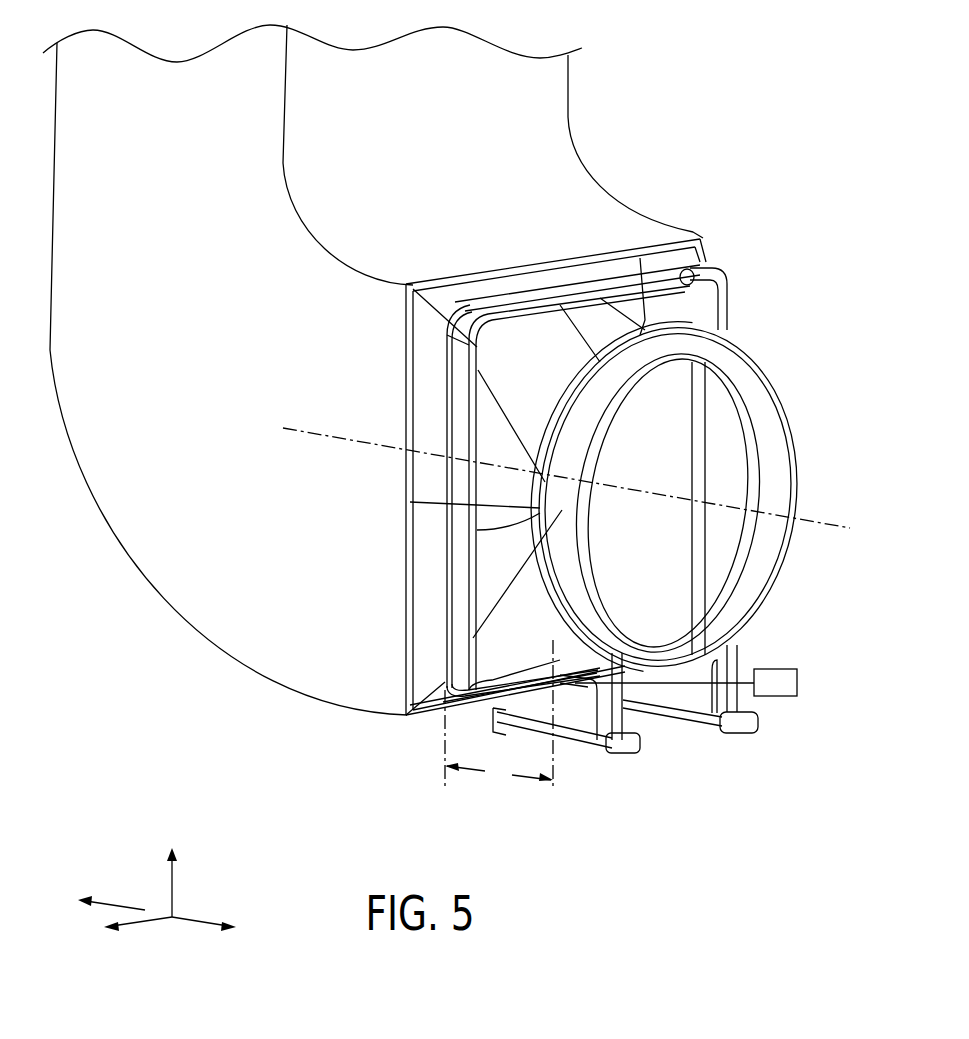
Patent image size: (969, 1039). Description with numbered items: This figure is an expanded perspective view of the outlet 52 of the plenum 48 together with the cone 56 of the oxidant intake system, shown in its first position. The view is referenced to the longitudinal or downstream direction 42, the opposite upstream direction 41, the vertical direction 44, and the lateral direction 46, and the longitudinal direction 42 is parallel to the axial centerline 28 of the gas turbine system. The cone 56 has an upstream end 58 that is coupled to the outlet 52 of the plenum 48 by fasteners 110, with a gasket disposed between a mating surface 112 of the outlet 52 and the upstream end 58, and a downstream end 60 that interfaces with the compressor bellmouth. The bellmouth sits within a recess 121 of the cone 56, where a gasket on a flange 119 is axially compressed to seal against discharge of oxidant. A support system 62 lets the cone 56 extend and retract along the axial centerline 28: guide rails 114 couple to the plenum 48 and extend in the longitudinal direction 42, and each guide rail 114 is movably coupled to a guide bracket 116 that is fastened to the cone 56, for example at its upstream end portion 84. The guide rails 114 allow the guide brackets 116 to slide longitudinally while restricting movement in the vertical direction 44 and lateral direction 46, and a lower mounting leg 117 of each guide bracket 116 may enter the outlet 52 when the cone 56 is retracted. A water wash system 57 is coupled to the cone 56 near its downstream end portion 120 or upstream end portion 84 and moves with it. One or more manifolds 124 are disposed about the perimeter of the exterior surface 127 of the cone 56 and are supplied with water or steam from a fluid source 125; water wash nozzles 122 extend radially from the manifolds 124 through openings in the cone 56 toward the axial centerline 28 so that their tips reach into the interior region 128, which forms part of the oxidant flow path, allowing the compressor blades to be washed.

The axial centerline 28 is at (812, 523).
The upstream direction 41 is at (118, 908).
The longitudinal direction 42 is at (198, 920).
The vertical direction 44 is at (170, 889).
The lateral direction 46 is at (145, 922).
The plenum 48 is at (150, 583).
The outlet 52 is at (415, 680).
The cone 56 is at (490, 572).
The water wash system 57 is at (600, 378).
The upstream end 58 is at (520, 717).
The downstream end 60 is at (748, 356).
The support system 62 is at (655, 758).
The upstream end portion 84 is at (773, 272).
The fasteners 110 is at (477, 442).
The mating surface 112 is at (478, 346).
The guide rails 114 is at (614, 264).
The guide brackets 116 is at (718, 282).
The lower mounting leg 117 is at (645, 322).
The flange 119 is at (748, 483).
The downstream end portion 120 is at (796, 441).
The recess 121 is at (782, 465).
The water wash nozzles 122 is at (477, 530).
The manifolds 124 is at (540, 490).
The fluid source 125 is at (775, 669).
The exterior surface 127 is at (510, 352).
The interior region 128 is at (655, 449).